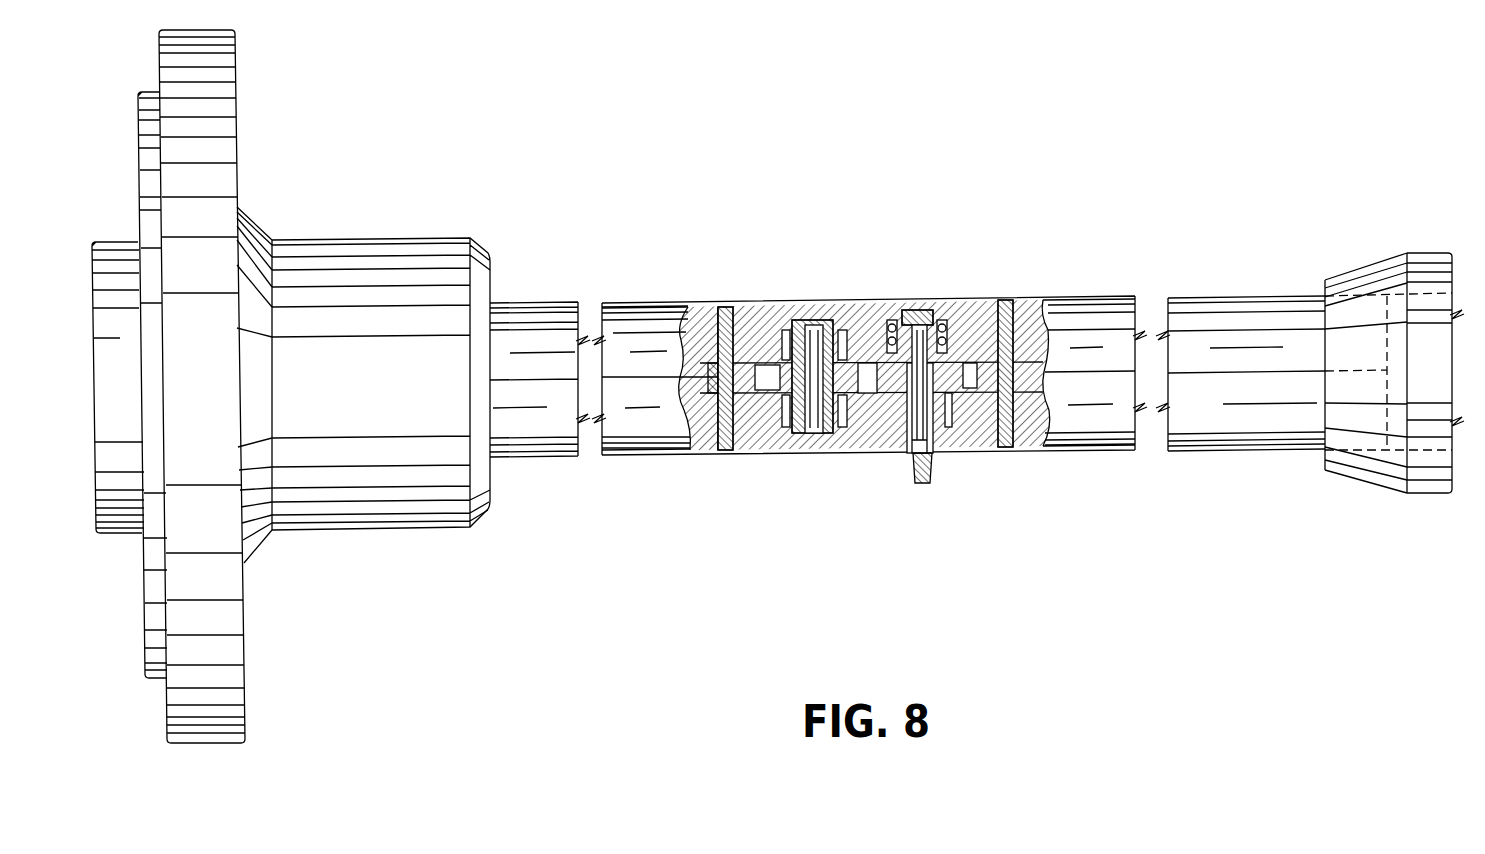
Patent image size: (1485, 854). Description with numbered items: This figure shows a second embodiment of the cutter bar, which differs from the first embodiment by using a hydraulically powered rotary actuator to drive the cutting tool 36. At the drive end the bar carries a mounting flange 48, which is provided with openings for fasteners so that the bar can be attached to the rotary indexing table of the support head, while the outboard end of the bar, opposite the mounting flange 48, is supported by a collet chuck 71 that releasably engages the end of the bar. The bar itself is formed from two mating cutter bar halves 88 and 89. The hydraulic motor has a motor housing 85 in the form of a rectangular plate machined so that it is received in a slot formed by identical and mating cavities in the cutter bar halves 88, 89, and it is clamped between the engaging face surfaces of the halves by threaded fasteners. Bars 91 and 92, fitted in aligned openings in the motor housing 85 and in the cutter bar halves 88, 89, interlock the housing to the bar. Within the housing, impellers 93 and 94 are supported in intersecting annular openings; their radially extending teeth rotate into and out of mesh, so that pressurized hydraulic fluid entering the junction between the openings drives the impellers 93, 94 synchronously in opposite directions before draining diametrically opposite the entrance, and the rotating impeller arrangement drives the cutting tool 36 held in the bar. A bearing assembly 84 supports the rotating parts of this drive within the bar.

The mounting flange 48 is at (237, 110).
The cutter bar half 88 is at (647, 302).
The cutter bar half 89 is at (647, 457).
The motor housing 85 is at (748, 312).
The bar 91 is at (730, 453).
The impeller 93 is at (885, 395).
The impeller 94 is at (878, 410).
The bearing 84 is at (965, 306).
The cutting tool 36 is at (932, 470).
The bar 92 is at (1003, 453).
The collet chuck 71 is at (1357, 473).